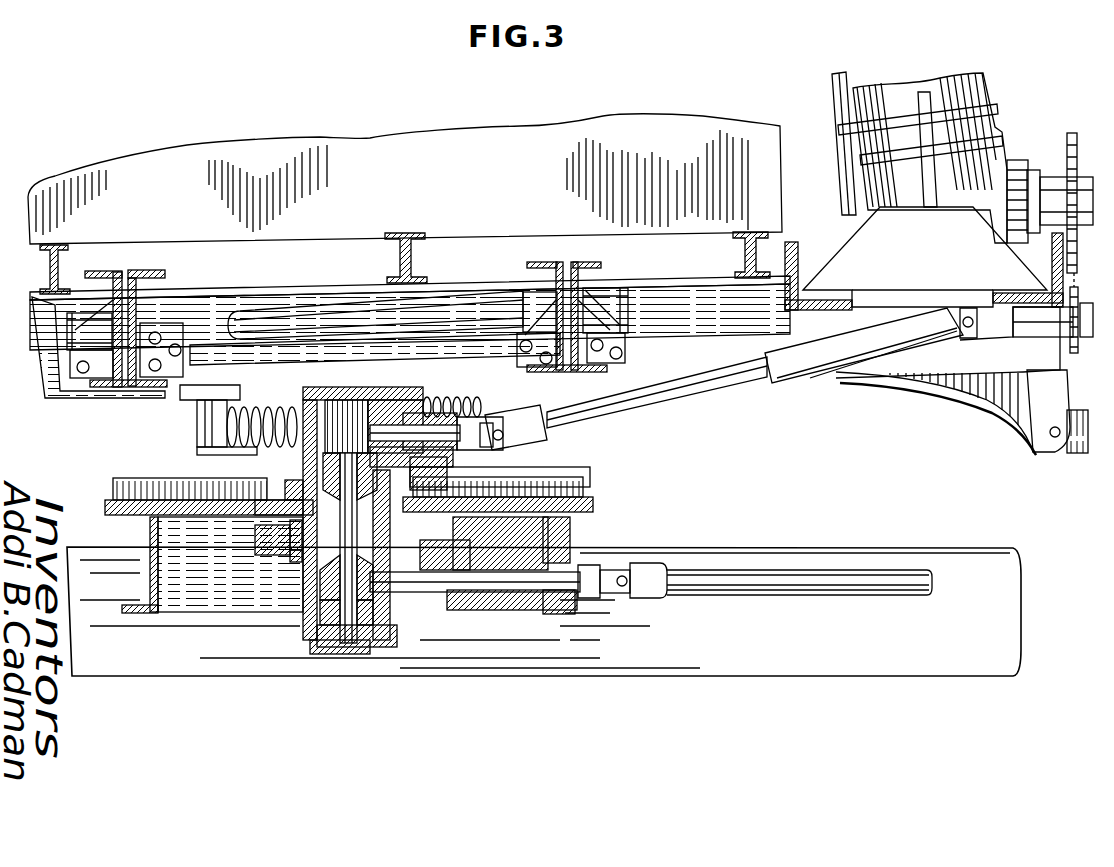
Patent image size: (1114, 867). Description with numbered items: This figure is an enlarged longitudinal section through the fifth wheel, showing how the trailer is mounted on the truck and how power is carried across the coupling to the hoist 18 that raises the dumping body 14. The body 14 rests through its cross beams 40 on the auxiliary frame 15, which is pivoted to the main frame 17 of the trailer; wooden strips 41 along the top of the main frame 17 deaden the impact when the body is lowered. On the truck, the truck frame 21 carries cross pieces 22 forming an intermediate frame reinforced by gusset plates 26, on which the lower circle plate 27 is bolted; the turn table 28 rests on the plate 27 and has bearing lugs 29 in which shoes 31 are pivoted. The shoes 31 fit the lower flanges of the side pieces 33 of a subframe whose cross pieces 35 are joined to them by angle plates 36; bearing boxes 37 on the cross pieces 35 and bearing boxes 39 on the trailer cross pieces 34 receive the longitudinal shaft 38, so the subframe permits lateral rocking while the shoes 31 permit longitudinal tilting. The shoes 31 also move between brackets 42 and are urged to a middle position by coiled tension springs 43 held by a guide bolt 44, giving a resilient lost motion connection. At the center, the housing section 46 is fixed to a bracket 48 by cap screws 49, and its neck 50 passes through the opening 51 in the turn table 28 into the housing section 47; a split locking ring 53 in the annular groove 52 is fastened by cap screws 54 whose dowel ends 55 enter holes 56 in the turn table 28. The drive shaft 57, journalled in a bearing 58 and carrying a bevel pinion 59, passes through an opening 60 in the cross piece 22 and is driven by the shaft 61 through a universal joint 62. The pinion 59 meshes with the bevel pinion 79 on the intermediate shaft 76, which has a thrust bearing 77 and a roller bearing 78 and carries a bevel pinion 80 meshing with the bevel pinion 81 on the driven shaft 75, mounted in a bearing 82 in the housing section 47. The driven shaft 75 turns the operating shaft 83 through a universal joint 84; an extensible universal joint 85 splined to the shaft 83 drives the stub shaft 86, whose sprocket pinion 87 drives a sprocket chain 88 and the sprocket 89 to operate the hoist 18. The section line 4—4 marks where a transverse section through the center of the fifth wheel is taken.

The section line 4— 4 is at (334, 221).
The rear dumping body 14 is at (770, 180).
The auxiliary frame 15 is at (1017, 417).
The main frame of the trailer 17 is at (890, 376).
The hoist 18 is at (985, 95).
The truck frame 21 is at (720, 550).
The cross pieces 22 is at (148, 570).
The gusset plates 26 is at (142, 615).
The circle plate 27 is at (595, 506).
The turn table 28 is at (583, 487).
The bearing lugs 29 is at (440, 467).
The shoes 31 is at (285, 362).
The side pieces 33 is at (200, 370).
The cross pieces 34 is at (108, 285).
The cross pieces 35 is at (160, 273).
The angle plates 36 is at (112, 385).
The bearing boxes 37 is at (532, 298).
The central longitudinally extending shaft 38 is at (440, 305).
The bearing boxes 39 is at (90, 338).
The cross beams 40 is at (412, 258).
The wooden strips 41 is at (708, 282).
The brackets 42 is at (210, 398).
The coiled tension springs 43 is at (225, 448).
The guide bolt 44 is at (200, 415).
The housing section 46 is at (320, 590).
The housing section 47 is at (300, 440).
The bracket 48 is at (250, 537).
The cap screws 49 is at (338, 545).
The reduced cylindrical neck portion 50 is at (455, 530).
The central opening 51 is at (548, 530).
The annular groove 52 is at (250, 510).
The split locking ring 53 is at (298, 490).
The cap screws 54 is at (285, 478).
The dowel ends 55 is at (288, 532).
The holes 56 is at (288, 555).
The drive shaft 57 is at (488, 588).
The bearing 58 is at (435, 618).
The bevel pinion 59 is at (360, 640).
The opening 60 is at (545, 570).
The shaft 61 is at (828, 590).
The universal joint 62 is at (625, 600).
The driven shaft 75 is at (472, 400).
The intermediate shaft 76 is at (345, 598).
The thrust bearing 77 is at (345, 605).
The roller bearing 78 is at (468, 548).
The bevel pinion 79 is at (330, 590).
The bevel pinion 80 is at (425, 460).
The bevel pinion 81 is at (470, 440).
The bearing 82 is at (422, 410).
The operating shaft 83 is at (688, 390).
The universal joint 84 is at (535, 448).
The extensible universal joint 85 is at (813, 372).
The stub shaft 86 is at (1077, 342).
The sprocket pinion 87 is at (1070, 346).
The sprocket chain 88 is at (1078, 285).
The sprocket 89 is at (1067, 140).